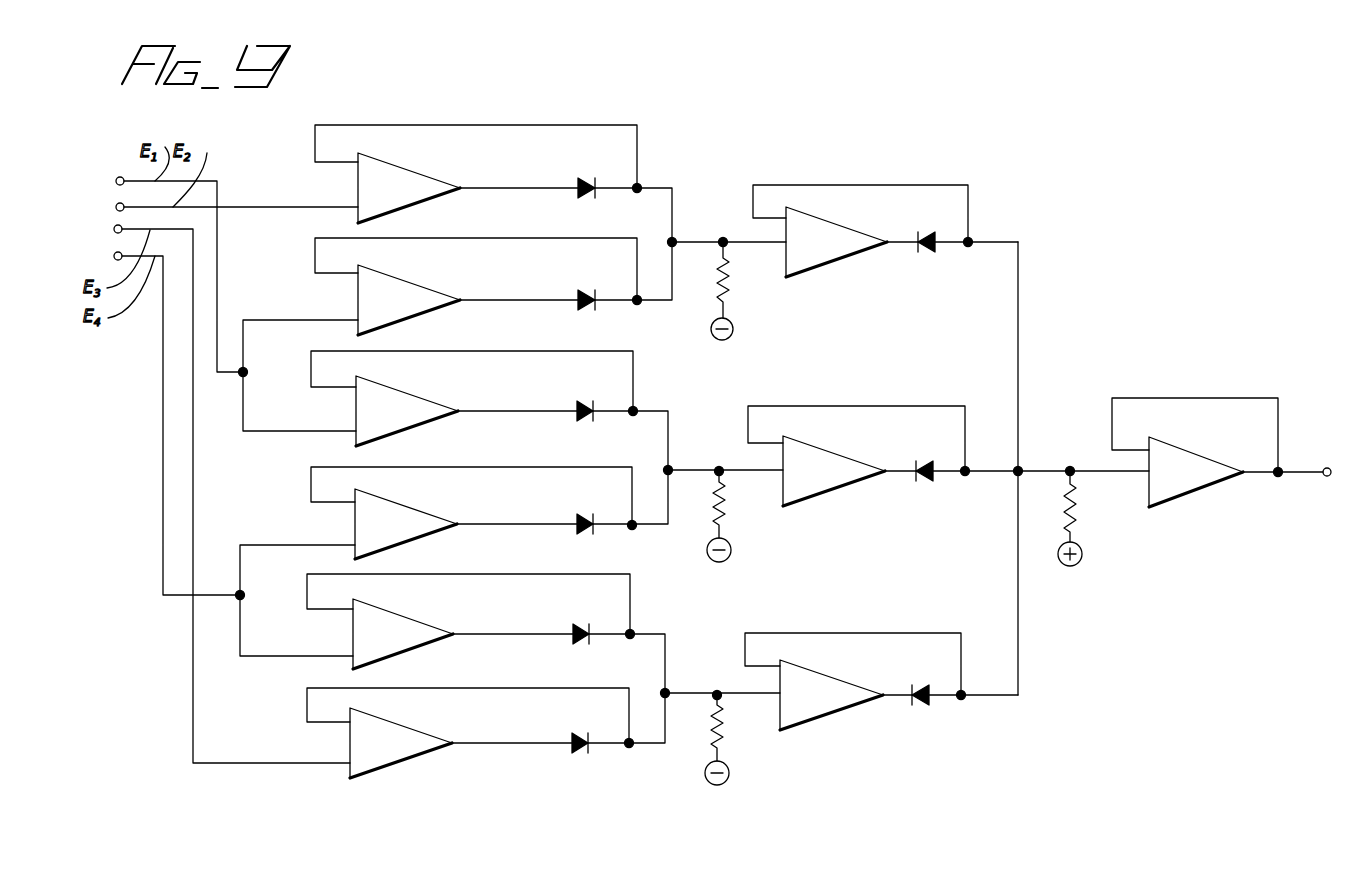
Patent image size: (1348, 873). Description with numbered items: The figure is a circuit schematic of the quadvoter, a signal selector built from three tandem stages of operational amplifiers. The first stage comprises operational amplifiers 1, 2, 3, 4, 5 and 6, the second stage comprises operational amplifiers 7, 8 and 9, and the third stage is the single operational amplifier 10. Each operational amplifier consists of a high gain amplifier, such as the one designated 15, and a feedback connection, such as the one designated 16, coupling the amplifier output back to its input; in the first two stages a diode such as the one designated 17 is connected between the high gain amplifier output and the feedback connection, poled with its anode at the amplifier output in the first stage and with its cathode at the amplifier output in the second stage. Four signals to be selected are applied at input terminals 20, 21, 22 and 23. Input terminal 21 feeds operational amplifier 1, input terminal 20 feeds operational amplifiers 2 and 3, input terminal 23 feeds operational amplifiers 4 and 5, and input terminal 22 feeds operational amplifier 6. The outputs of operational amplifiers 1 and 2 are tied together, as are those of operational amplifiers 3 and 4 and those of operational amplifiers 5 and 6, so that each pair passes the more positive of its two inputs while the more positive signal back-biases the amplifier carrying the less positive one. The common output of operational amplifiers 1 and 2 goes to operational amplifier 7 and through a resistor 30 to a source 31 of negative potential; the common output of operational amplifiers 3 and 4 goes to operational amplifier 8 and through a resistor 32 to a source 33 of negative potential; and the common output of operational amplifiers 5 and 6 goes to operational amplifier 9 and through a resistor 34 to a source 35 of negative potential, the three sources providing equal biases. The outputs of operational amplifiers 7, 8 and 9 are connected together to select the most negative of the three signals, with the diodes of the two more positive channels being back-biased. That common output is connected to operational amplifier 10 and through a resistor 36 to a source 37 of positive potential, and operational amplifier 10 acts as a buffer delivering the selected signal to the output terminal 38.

The operational amplifier 1 is at (497, 161).
The operational amplifier 2 is at (497, 285).
The operational amplifier 3 is at (497, 393).
The operational amplifier 4 is at (491, 506).
The operational amplifier 5 is at (492, 617).
The operational amplifier 6 is at (486, 728).
The operational amplifier 7 is at (894, 225).
The operational amplifier 8 is at (907, 450).
The operational amplifier 9 is at (896, 675).
The operational amplifier 10 is at (1218, 443).
The high gain amplifier 15 is at (410, 763).
The feedback connection 16 is at (559, 687).
The diode 17 is at (586, 754).
The input terminal 20 is at (116, 181).
The input terminal 21 is at (115, 208).
The input terminal 22 is at (114, 230).
The input terminal 23 is at (114, 256).
The resistor 30 is at (729, 283).
The source of negative potential 31 is at (733, 329).
The resistor 32 is at (725, 515).
The source of negative potential 33 is at (731, 550).
The resistor 34 is at (723, 738).
The source of negative potential 35 is at (729, 773).
The resistor 36 is at (1076, 506).
The source of positive potential 37 is at (1082, 558).
The output terminal 38 is at (1328, 476).